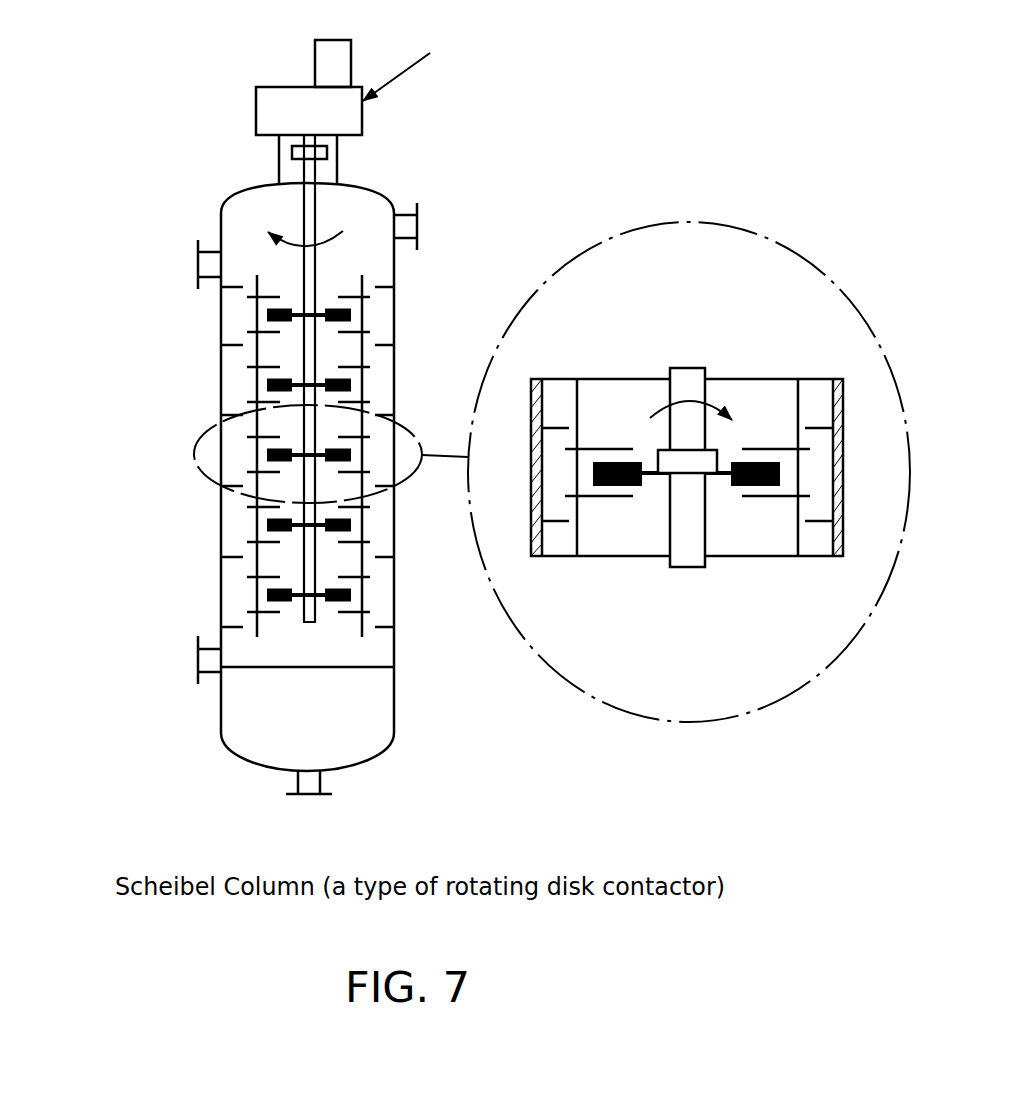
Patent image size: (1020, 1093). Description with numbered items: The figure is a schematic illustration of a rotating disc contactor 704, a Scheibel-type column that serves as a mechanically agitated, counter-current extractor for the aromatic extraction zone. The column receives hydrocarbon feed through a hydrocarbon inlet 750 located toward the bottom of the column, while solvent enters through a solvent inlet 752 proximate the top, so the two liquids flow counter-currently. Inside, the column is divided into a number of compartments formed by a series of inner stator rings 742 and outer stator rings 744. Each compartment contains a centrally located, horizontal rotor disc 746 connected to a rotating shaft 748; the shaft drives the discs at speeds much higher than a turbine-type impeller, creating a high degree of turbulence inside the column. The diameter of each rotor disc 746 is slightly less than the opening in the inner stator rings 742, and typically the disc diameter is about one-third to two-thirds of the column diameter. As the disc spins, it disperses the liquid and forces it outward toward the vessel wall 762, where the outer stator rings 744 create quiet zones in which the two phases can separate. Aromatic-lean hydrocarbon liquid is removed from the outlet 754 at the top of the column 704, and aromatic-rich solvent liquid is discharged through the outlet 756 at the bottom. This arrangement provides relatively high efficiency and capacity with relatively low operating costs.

The rotating disc contactor 704 is at (100, 100).
The inner stator rings 742 is at (775, 503).
The outer stator rings 744 is at (558, 410).
The rotor disc 746 is at (593, 493).
The rotating shaft 748 is at (687, 357).
The hydrocarbon inlet 750 is at (195, 658).
The solvent inlet 752 is at (193, 263).
The outlet 754 is at (557, 226).
The outlet 756 is at (309, 862).
The vessel wall 762 is at (833, 377).